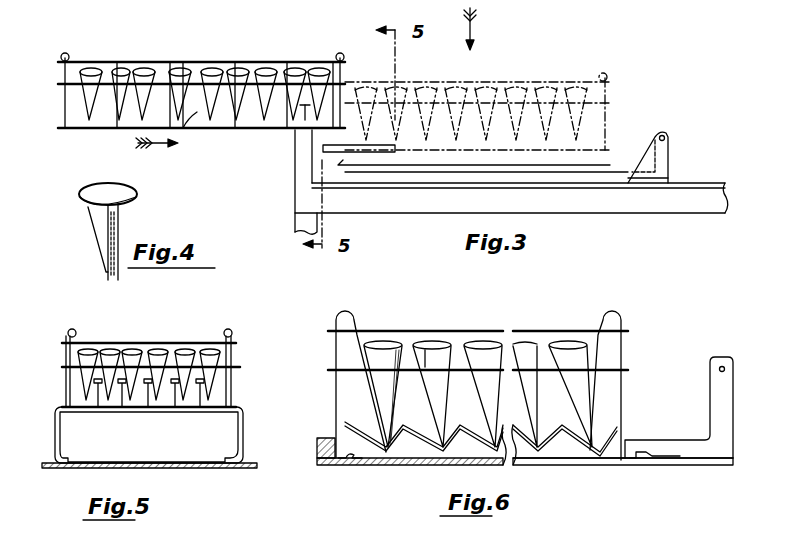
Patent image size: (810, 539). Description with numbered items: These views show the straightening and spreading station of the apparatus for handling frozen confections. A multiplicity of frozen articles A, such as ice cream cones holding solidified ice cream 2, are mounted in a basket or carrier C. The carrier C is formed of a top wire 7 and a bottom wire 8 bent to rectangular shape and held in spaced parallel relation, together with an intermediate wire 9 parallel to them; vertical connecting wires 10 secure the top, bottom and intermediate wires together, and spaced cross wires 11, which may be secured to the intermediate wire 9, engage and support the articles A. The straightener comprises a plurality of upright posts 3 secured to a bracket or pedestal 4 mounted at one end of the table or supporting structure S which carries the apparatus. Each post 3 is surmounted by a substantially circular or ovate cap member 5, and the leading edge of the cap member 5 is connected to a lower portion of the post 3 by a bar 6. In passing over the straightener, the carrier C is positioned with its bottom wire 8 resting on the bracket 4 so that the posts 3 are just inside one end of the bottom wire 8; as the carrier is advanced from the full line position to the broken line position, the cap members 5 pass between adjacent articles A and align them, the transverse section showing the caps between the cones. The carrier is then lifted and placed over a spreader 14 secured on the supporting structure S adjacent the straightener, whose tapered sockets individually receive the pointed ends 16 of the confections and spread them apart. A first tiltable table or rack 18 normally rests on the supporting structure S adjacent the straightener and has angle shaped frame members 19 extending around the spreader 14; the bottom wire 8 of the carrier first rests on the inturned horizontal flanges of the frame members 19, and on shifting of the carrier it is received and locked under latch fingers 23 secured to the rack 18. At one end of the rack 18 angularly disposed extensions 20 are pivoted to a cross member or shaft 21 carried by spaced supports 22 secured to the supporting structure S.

In FIG. 3, the carrier C is at (316, 93).
In FIG. 5, the carrier C is at (147, 359).
In FIG. 6, the carrier C is at (467, 375).
In FIG. 3, the frozen confection A is at (205, 92).
In FIG. 5, the frozen confection A is at (138, 368).
In FIG. 6, the frozen confection A is at (478, 369).
In FIG. 3, the ice cream 2 is at (312, 76).
In FIG. 6, the ice cream 2 is at (390, 345).
In FIG. 3, the upright post 3 is at (300, 122).
In FIG. 4, the upright post 3 is at (107, 233).
In FIG. 5, the upright post 3 is at (105, 400).
In FIG. 3, the bracket 4 is at (292, 160).
In FIG. 5, the bracket 4 is at (246, 444).
In FIG. 4, the cap member 5 is at (128, 192).
In FIG. 5, the cap member 5 is at (85, 380).
In FIG. 4, the bar 6 is at (90, 228).
In FIG. 3, the top wire 7 is at (212, 72).
In FIG. 5, the top wire 7 is at (200, 350).
In FIG. 6, the top wire 7 is at (580, 334).
In FIG. 3, the bottom wire 8 is at (230, 128).
In FIG. 5, the bottom wire 8 is at (238, 410).
In FIG. 6, the bottom wire 8 is at (328, 440).
In FIG. 3, the intermediate wire 9 is at (264, 74).
In FIG. 5, the intermediate wire 9 is at (240, 368).
In FIG. 6, the intermediate wire 9 is at (335, 370).
In FIG. 3, the vertical connecting wire 10 is at (142, 98).
In FIG. 3, the cross wire 11 is at (178, 96).
In FIG. 6, the cross wire 11 is at (428, 367).
In FIG. 3, the spreader 14 is at (608, 165).
In FIG. 6, the spreader 14 is at (604, 426).
In FIG. 3, the pointed end 16 is at (197, 128).
In FIG. 6, the pointed end 16 is at (542, 432).
In FIG. 3, the tiltable table 18 is at (503, 176).
In FIG. 6, the tiltable table 18 is at (710, 358).
In FIG. 6, the angle shaped frame member 19 is at (331, 466).
In FIG. 6, the angularly disposed extension 20 is at (699, 386).
In FIG. 3, the cross member 21 is at (665, 131).
In FIG. 6, the cross member 21 is at (724, 364).
In FIG. 3, the support 22 is at (672, 142).
In FIG. 6, the latch finger 23 is at (348, 462).
In FIG. 3, the supporting structure S is at (606, 215).
In FIG. 5, the supporting structure S is at (208, 468).